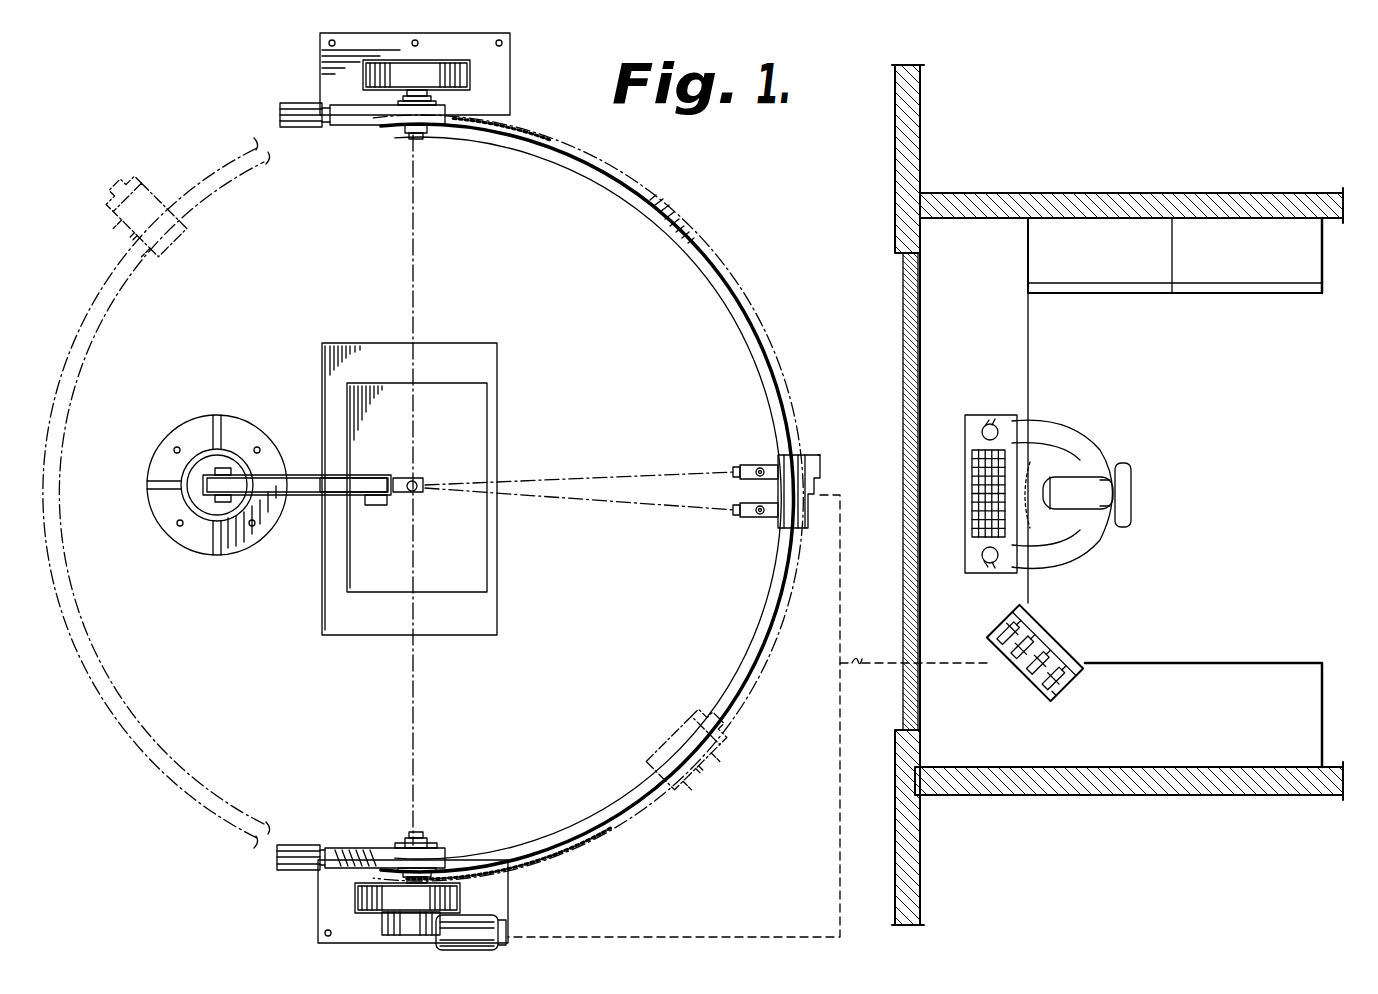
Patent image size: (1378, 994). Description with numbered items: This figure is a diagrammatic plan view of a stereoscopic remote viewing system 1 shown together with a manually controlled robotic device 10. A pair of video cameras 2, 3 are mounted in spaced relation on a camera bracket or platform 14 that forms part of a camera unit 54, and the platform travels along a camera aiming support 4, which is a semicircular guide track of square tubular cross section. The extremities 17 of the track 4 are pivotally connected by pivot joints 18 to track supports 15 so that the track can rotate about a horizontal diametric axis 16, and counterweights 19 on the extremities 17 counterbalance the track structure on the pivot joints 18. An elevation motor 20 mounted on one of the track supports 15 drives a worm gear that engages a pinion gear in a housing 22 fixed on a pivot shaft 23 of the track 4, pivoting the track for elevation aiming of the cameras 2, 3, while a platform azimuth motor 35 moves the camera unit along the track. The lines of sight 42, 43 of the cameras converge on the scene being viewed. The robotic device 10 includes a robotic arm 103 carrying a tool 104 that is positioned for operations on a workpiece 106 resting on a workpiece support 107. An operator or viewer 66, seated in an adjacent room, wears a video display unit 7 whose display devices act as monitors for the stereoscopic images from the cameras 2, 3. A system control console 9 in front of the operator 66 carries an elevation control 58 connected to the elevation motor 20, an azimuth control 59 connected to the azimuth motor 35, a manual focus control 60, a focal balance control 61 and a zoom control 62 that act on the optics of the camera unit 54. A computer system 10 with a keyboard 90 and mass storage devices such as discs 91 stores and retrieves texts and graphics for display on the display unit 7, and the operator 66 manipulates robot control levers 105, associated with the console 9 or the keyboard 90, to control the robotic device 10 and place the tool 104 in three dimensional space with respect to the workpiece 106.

The stereoscopic remote viewing system 1 is at (100, 823).
The video camera 2 is at (745, 517).
The video camera 3 is at (748, 465).
The camera aiming support 4 is at (737, 286).
The video display unit 7 is at (1100, 475).
The system control console 9 is at (1040, 651).
The computer system / robotic device 10 is at (300, 496).
The camera bracket or platform 14 is at (770, 456).
The track supports 15 is at (462, 80).
The horizontal diametric axis 16 is at (414, 686).
The extremities of the track 17 is at (358, 116).
The pivot joints 18 is at (424, 130).
The counterweights 19 is at (285, 106).
The elevation motor 20 is at (470, 914).
The pinion gear housing 22 is at (382, 925).
The pivot shaft 23 is at (405, 843).
The platform azimuth motor 35 is at (818, 456).
The line of sight 42 is at (606, 503).
The line of sight 43 is at (640, 468).
The camera unit 54 is at (778, 533).
The elevation control 58 is at (1010, 631).
The azimuth control 59 is at (1051, 696).
The manual focus control 60 is at (1055, 676).
The focal balance control 61 is at (1040, 661).
The zoom control 62 is at (1024, 645).
The operator or viewer 66 is at (1106, 538).
The keyboard 90 is at (965, 450).
The mass storage devices 91 is at (1262, 285).
The robotic arm 103 is at (305, 478).
The tool 104 is at (425, 483).
The robot control levers 105 is at (992, 428).
The workpiece 106 is at (488, 560).
The workpiece support 107 is at (490, 624).